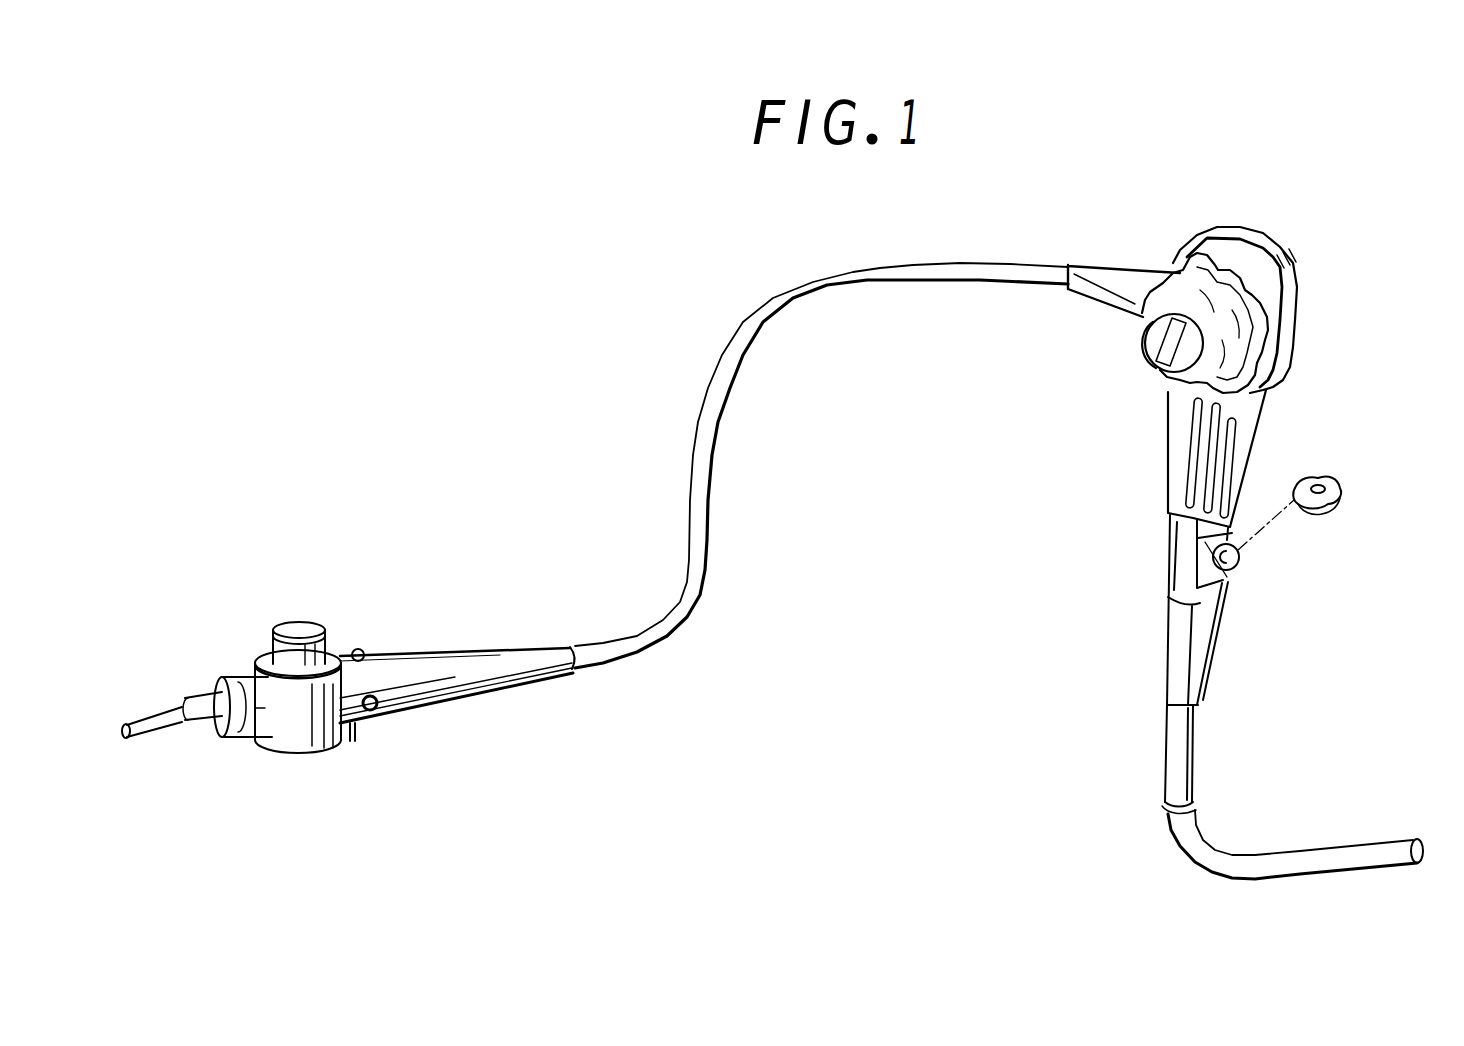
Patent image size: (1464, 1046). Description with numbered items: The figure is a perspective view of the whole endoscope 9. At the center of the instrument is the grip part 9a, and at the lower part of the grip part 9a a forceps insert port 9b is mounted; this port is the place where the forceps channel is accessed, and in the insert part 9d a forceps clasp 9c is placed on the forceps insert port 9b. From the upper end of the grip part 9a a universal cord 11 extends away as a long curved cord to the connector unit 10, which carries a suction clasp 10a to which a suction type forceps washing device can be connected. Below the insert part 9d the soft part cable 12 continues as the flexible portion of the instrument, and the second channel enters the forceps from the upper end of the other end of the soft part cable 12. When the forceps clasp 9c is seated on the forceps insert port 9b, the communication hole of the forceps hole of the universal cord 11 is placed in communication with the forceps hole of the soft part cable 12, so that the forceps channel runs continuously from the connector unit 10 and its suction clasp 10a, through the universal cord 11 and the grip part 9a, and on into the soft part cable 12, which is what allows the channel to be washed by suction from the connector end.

The endoscope 9 is at (1298, 330).
The grip part 9a is at (1168, 450).
The forceps insert port 9b is at (1237, 572).
The forceps clasp 9c is at (1320, 512).
The insert part 9d is at (1168, 572).
The light source connector unit 10 is at (292, 620).
The suction clasp 10a is at (361, 649).
The universal cord 11 is at (903, 283).
The soft part cable 12 is at (1279, 860).